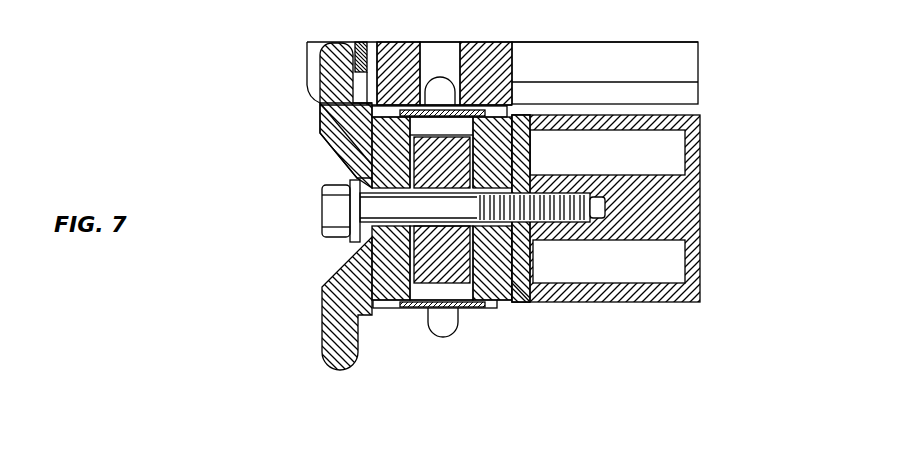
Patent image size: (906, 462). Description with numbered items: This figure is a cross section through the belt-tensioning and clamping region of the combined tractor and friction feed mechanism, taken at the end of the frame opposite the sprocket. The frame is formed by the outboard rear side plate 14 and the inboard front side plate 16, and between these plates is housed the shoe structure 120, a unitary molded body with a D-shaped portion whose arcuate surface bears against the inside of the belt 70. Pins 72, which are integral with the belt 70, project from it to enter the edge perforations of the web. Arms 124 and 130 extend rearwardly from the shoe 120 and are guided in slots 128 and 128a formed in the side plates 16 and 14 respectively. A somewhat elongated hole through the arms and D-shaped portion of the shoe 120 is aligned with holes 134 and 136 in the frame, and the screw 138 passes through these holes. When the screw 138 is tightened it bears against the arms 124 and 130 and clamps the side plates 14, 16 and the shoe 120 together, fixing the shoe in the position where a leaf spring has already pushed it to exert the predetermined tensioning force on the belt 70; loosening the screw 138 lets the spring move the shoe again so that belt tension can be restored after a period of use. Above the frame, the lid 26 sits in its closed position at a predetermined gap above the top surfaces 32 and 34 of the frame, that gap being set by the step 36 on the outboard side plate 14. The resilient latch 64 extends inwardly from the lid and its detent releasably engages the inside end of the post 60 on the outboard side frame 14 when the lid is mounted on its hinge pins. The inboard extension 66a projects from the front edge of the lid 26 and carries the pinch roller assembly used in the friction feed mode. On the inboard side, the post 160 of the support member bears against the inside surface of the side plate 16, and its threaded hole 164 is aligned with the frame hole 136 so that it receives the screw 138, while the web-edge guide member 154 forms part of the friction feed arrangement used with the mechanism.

The outboard side plate 14 is at (390, 303).
The inboard side plate 16 is at (503, 303).
The lid 26 is at (487, 41).
The top surface 32 is at (385, 47).
The top surface 34 is at (515, 105).
The step 36 is at (320, 102).
The post 60 is at (336, 50).
The resilient latch 64 is at (359, 44).
The inboard extension 66a is at (699, 62).
The belt 70 is at (420, 43).
The pins 72 is at (457, 86).
The shoe structure 120 is at (400, 187).
The arm 124 is at (497, 178).
The slot 128 is at (483, 236).
The slot 128a is at (377, 240).
The arm 130 is at (372, 167).
The hole 134 is at (377, 238).
The hole 136 is at (546, 176).
The screw 138 is at (315, 208).
The web-edge guide member 154 is at (521, 302).
The post 160 is at (637, 208).
The hole 164 is at (575, 186).